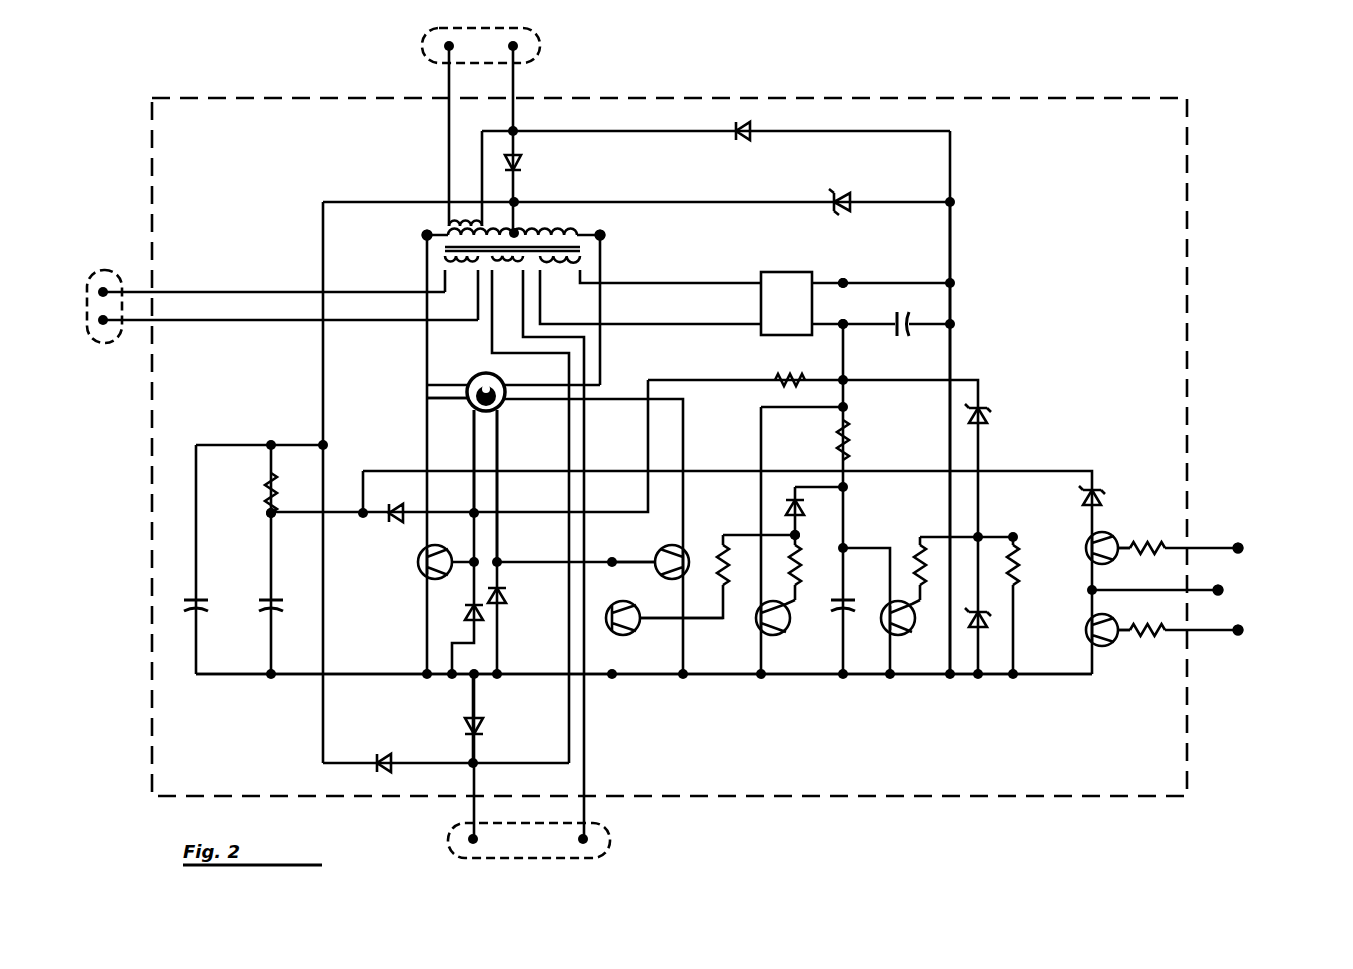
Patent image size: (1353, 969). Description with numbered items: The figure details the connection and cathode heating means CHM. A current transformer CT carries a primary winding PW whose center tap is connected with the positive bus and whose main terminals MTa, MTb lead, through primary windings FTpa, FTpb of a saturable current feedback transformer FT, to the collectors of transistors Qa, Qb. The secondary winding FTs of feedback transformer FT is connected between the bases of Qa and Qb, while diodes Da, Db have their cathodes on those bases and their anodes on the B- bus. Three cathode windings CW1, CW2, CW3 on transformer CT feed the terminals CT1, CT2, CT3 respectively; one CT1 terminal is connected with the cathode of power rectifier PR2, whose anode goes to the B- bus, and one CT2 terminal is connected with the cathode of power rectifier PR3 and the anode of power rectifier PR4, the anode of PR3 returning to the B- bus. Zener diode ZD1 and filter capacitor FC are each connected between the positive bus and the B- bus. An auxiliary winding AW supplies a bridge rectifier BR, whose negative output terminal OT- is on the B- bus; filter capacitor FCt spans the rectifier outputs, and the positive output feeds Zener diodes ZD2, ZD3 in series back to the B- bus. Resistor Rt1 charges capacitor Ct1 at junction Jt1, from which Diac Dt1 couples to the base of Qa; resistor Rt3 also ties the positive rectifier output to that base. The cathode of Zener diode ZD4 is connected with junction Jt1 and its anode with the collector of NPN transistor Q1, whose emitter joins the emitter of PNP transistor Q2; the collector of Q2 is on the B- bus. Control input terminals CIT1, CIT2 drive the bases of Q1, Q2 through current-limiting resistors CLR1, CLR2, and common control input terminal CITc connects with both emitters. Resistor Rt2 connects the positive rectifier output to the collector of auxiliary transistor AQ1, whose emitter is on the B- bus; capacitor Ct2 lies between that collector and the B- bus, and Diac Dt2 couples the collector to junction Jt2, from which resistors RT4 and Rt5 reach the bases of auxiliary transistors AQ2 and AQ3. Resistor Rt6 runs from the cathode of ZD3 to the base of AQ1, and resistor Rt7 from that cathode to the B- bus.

The connection and cathode heating means CHM is at (1198, 287).
The CT1 terminals CT1 is at (540, 52).
The CT2 terminals CT2 is at (610, 830).
The CT3 terminals CT3 is at (118, 270).
The current transformer CT is at (510, 230).
The first cathode winding CW1 is at (466, 220).
The second cathode winding CW2 is at (510, 273).
The third cathode winding CW3 is at (463, 273).
The primary winding PW is at (487, 235).
The auxiliary winding AW is at (560, 270).
The main terminal MTa is at (424, 234).
The main terminal MTb is at (602, 238).
The saturable current feedback transformer FT is at (462, 404).
The primary winding of feedback transformer FTpa is at (470, 396).
The primary winding of feedback transformer FTpb is at (518, 396).
The secondary winding of feedback transformer FTs is at (485, 417).
The B− bus B- is at (950, 245).
The second power rectifier PR2 is at (745, 142).
The third power rectifier PR3 is at (484, 727).
The fourth power rectifier PR4 is at (385, 755).
The first Zener diode ZD1 is at (835, 210).
The second Zener diode ZD2 is at (986, 408).
The third Zener diode ZD3 is at (978, 640).
The fourth Zener diode ZD4 is at (1102, 500).
The bridge rectifier BR is at (786, 303).
The negative output terminal OT- is at (845, 280).
The filter capacitor FCt is at (910, 312).
The resistor Rt1 is at (265, 492).
The resistor Rt2 is at (850, 446).
The resistor Rt3 is at (786, 378).
The resistor RT4 is at (803, 580).
The resistor Rt5 is at (718, 566).
The resistor Rt6 is at (914, 565).
The resistor Rt7 is at (1020, 565).
The junction Jt1 is at (270, 518).
The junction Jt2 is at (802, 528).
The capacitor Ct1 is at (263, 600).
The capacitor Ct2 is at (857, 616).
The filter capacitor FC is at (204, 614).
The first Diac Dt1 is at (396, 525).
The second Diac Dt2 is at (785, 497).
The diode Da is at (467, 620).
The diode Db is at (500, 600).
The transistor Qa is at (420, 570).
The transistor Qb is at (660, 548).
The first auxiliary transistor AQ1 is at (900, 636).
The second auxiliary transistor AQ2 is at (760, 640).
The third auxiliary transistor AQ3 is at (608, 638).
The NPN transistor Q1 is at (1090, 545).
The PNP transistor Q2 is at (1088, 634).
The current-limiting resistor CLR1 is at (1150, 538).
The current-limiting resistor CLR2 is at (1155, 642).
The control input terminal CIT1 is at (1240, 543).
The common control input terminal CITc is at (1225, 594).
The control input terminal CIT2 is at (1245, 634).